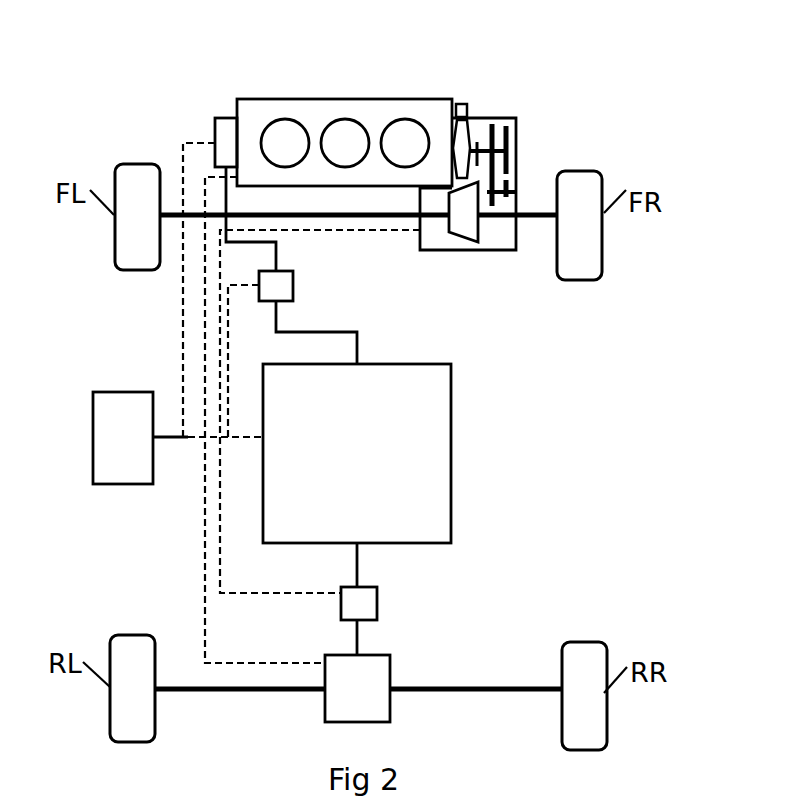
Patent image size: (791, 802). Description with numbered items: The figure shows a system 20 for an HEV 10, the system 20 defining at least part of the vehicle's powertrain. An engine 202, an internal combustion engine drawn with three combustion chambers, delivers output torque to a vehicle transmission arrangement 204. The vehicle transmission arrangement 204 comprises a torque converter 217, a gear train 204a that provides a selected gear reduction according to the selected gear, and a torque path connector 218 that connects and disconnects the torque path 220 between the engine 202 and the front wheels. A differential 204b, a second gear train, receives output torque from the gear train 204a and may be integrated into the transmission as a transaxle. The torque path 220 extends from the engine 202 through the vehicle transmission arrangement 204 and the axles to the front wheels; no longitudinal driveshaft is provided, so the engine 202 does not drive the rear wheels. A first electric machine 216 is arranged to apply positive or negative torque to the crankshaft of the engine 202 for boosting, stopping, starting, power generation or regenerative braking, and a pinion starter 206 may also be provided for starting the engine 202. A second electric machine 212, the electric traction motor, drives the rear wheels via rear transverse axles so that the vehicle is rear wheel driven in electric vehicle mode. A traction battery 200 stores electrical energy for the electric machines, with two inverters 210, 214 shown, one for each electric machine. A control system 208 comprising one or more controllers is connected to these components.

The HEV 10 is at (626, 40).
The system 20 is at (578, 113).
The traction battery 200 is at (451, 453).
The engine 202 is at (313, 98).
The vehicle transmission arrangement 204 is at (488, 120).
The gear train 204a is at (508, 156).
The differential 204b is at (478, 232).
The pinion starter 206 is at (463, 103).
The control system 208 is at (93, 437).
The inverter 210 is at (377, 603).
The second electric machine 212 is at (392, 710).
The inverter 214 is at (295, 285).
The first electric machine 216 is at (228, 116).
The torque converter 217 is at (468, 123).
The torque path connector 218 is at (492, 138).
The torque path 220 is at (395, 217).